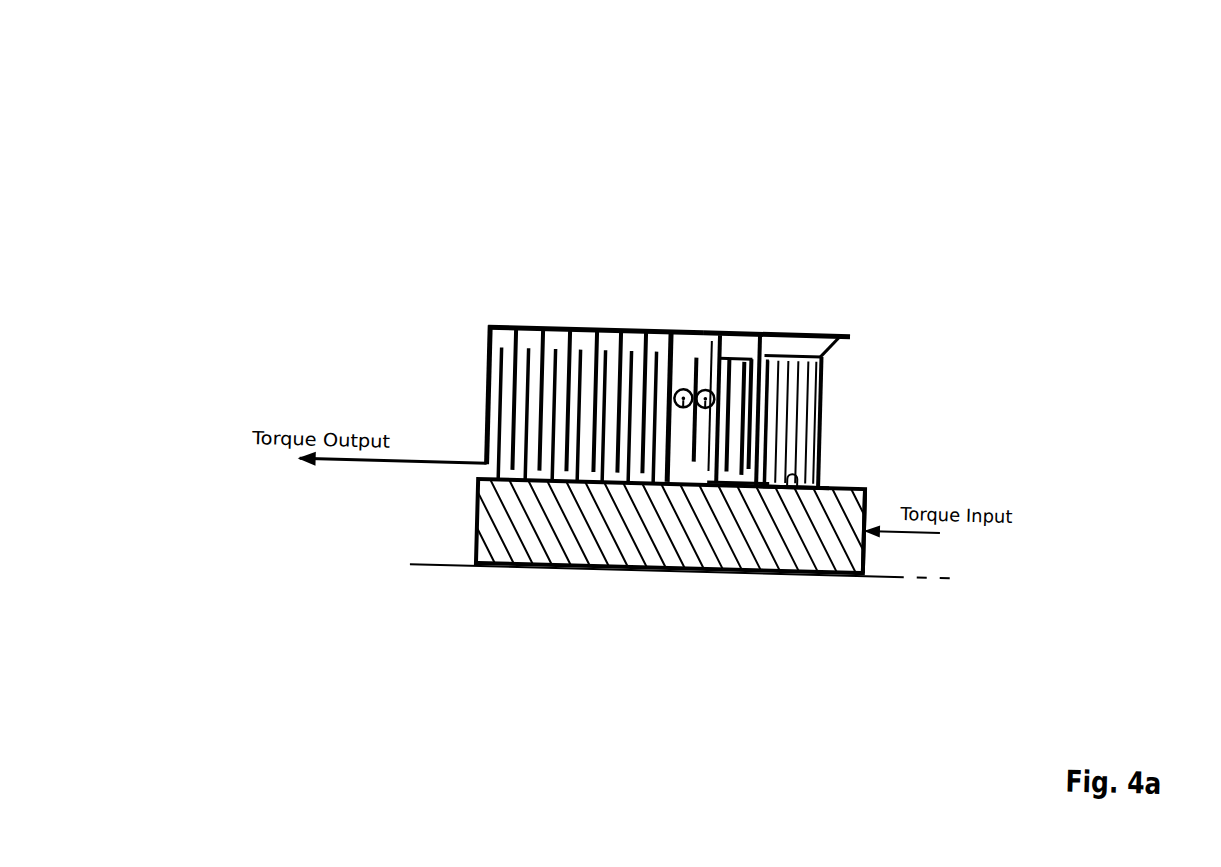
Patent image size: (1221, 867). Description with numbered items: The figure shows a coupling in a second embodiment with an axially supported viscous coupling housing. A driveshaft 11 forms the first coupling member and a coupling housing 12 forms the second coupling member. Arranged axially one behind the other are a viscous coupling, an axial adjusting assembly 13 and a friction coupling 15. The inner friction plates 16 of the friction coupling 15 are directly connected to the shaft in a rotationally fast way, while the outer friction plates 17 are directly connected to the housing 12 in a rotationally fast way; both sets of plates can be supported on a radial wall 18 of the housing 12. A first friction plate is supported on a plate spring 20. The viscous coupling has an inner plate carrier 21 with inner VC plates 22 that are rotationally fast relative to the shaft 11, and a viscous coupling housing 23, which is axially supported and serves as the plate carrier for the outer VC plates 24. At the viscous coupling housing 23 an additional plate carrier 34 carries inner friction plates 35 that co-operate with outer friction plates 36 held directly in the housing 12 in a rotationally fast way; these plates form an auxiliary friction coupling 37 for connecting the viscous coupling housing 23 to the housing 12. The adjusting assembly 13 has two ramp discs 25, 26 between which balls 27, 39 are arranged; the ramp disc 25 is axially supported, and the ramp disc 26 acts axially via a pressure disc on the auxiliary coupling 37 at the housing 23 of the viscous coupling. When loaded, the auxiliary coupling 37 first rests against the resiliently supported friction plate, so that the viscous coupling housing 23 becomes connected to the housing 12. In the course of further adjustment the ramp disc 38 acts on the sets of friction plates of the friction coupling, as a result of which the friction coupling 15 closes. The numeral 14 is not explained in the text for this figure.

The driveshaft 11 is at (851, 568).
The coupling housing 12 is at (530, 331).
The axial adjusting assembly 13 is at (677, 420).
The housing cover 14 is at (804, 209).
The friction coupling 15 is at (575, 251).
The inner friction plates 16 is at (521, 374).
The outer friction plates 17 is at (620, 332).
The radial wall 18 is at (487, 405).
The plate spring 20 is at (757, 328).
The inner plate carrier 21 is at (809, 480).
The inner VC plates 22 is at (836, 485).
The viscous coupling housing 23 is at (805, 351).
The outer VC plates 24 is at (829, 336).
The ramp disc 25 is at (695, 461).
The ramp disc 26 is at (718, 469).
The ball 27 is at (703, 408).
The additional plate carrier 34 is at (776, 486).
The inner friction plates 35 is at (753, 482).
The outer friction plates 36 is at (742, 330).
The auxiliary friction coupling 37 is at (719, 212).
The ramp disc 38 is at (678, 409).
The ball 39 is at (685, 409).